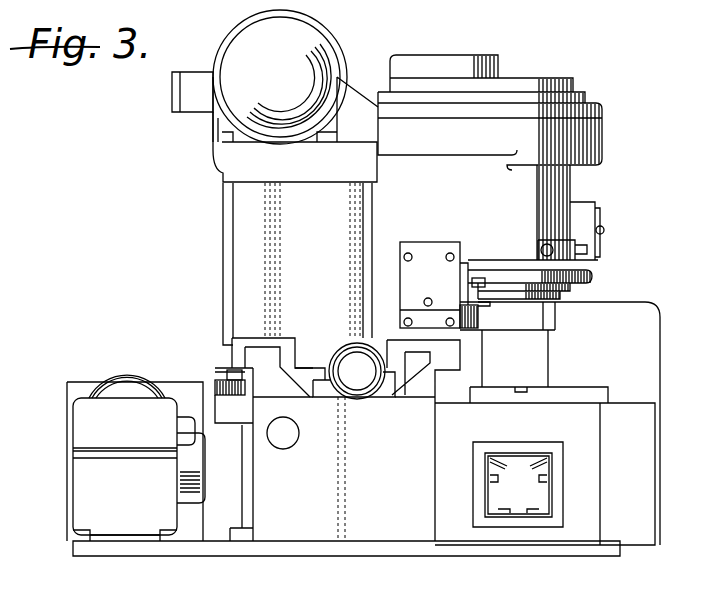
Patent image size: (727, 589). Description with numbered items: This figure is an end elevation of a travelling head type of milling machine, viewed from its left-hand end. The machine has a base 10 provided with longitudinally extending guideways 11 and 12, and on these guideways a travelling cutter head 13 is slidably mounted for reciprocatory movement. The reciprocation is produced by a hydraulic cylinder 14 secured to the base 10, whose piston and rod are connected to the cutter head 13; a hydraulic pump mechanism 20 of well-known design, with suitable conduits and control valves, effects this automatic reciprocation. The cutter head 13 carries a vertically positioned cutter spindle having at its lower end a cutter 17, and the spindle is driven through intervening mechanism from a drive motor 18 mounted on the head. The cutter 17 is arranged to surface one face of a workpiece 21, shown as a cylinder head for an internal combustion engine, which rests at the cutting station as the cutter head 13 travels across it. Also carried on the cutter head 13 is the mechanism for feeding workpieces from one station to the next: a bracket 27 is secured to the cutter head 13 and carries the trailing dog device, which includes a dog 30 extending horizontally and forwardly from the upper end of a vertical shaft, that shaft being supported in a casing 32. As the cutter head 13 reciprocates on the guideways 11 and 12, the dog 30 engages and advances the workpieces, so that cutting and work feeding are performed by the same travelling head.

The base 10 is at (381, 548).
The guideway 11 is at (268, 362).
The guideway 12 is at (427, 362).
The travelling cutter head 13 is at (440, 210).
The hydraulic cylinder 14 is at (362, 380).
The cutter 17 is at (562, 297).
The drive motor 18 is at (313, 55).
The hydraulic pump mechanism 20 is at (62, 492).
The workpiece 21 is at (535, 316).
The bracket 27 is at (443, 296).
The dog 30 is at (486, 305).
The casing 32 is at (478, 328).